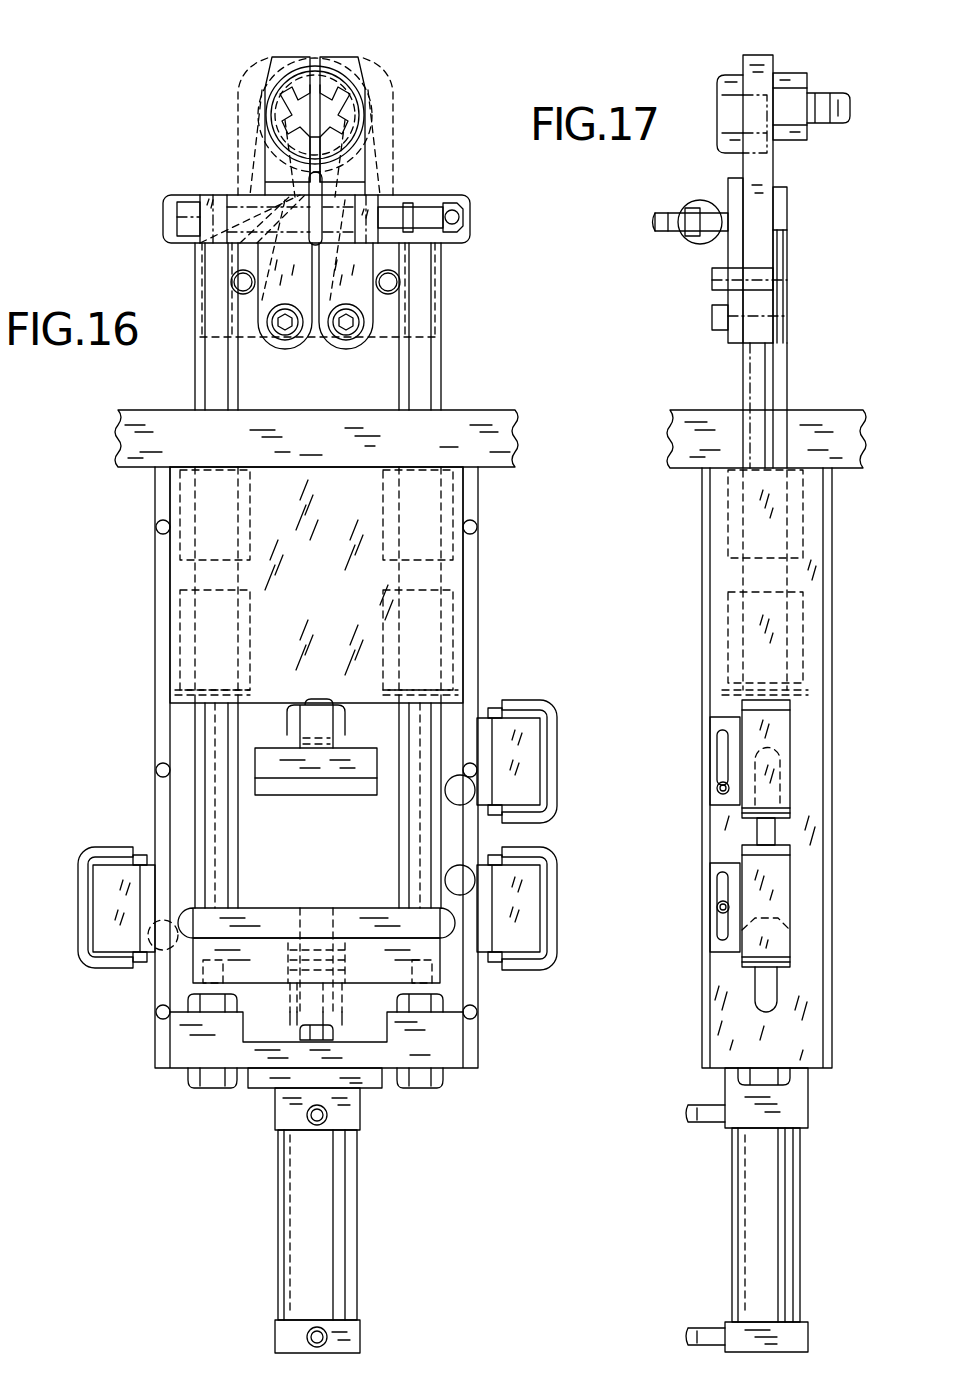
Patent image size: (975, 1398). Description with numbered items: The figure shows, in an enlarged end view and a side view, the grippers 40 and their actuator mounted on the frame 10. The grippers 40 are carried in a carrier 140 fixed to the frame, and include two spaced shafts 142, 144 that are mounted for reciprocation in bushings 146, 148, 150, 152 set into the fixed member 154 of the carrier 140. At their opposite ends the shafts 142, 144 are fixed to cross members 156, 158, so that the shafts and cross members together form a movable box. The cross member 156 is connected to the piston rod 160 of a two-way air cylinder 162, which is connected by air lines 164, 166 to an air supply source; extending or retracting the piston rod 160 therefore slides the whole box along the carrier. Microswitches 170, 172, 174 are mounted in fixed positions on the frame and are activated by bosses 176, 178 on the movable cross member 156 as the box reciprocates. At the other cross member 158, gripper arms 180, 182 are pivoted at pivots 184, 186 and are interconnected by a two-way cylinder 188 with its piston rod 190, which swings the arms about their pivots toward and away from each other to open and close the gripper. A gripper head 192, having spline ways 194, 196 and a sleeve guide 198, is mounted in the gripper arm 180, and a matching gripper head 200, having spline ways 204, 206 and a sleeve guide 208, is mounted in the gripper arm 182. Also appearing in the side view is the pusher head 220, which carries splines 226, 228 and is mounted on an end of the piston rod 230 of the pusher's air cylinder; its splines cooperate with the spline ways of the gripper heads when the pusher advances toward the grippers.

In FIG. 16, the frame 10 is at (493, 425).
In FIG. 17, the frame 10 is at (678, 438).
In FIG. 16, the grippers 40 is at (228, 66).
In FIG. 17, the grippers 40 is at (700, 130).
In FIG. 16, the carrier 140 is at (470, 582).
In FIG. 17, the carrier 140 is at (706, 600).
In FIG. 16, the shaft 142 is at (222, 831).
In FIG. 17, the shaft 142 is at (782, 303).
In FIG. 16, the shaft 144 is at (410, 831).
In FIG. 17, the shaft 144 is at (782, 383).
In FIG. 16, the bushing 146 is at (180, 502).
In FIG. 16, the bushing 148 is at (180, 640).
In FIG. 16, the bushing 150 is at (453, 505).
In FIG. 17, the bushing 150 is at (728, 541).
In FIG. 16, the bushing 152 is at (453, 644).
In FIG. 17, the bushing 152 is at (728, 653).
In FIG. 16, the fixed member 154 is at (332, 607).
In FIG. 16, the cross member 156 is at (290, 915).
In FIG. 16, the cross member 158 is at (385, 320).
In FIG. 16, the piston rod 160 is at (332, 1013).
In FIG. 16, the two-way air cylinder 162 is at (340, 1201).
In FIG. 17, the two-way air cylinder 162 is at (745, 1201).
In FIG. 16, the air line 164 is at (310, 1116).
In FIG. 17, the air line 164 is at (690, 1113).
In FIG. 16, the air line 166 is at (310, 1333).
In FIG. 17, the air line 166 is at (688, 1333).
In FIG. 16, the microswitch 170 is at (100, 907).
In FIG. 16, the microswitch 172 is at (525, 751).
In FIG. 17, the microswitch 172 is at (785, 751).
In FIG. 16, the microswitch 174 is at (525, 908).
In FIG. 17, the microswitch 174 is at (778, 908).
In FIG. 16, the boss 176 is at (190, 945).
In FIG. 16, the boss 178 is at (445, 930).
In FIG. 16, the gripper arm 180 is at (278, 165).
In FIG. 16, the gripper arm 182 is at (357, 165).
In FIG. 17, the gripper arm 182 is at (762, 203).
In FIG. 16, the pivot 184 is at (285, 340).
In FIG. 16, the pivot 186 is at (347, 340).
In FIG. 17, the pivot 186 is at (718, 316).
In FIG. 16, the two-way cylinder 188 is at (255, 218).
In FIG. 17, the two-way cylinder 188 is at (698, 238).
In FIG. 16, the piston rod 190 is at (430, 220).
In FIG. 16, the gripper head 192 is at (306, 84).
In FIG. 16, the spline way 194 is at (278, 75).
In FIG. 16, the spline way 196 is at (300, 128).
In FIG. 16, the sleeve guide 198 is at (300, 112).
In FIG. 16, the gripper head 200 is at (326, 84).
In FIG. 17, the gripper head 200 is at (725, 88).
In FIG. 16, the spline way 204 is at (328, 110).
In FIG. 16, the spline way 206 is at (332, 128).
In FIG. 16, the sleeve guide 208 is at (330, 118).
In FIG. 17, the pusher head 220 is at (838, 152).
In FIG. 17, the spline 226 is at (783, 133).
In FIG. 17, the spline 228 is at (787, 85).
In FIG. 17, the piston rod 230 is at (838, 108).